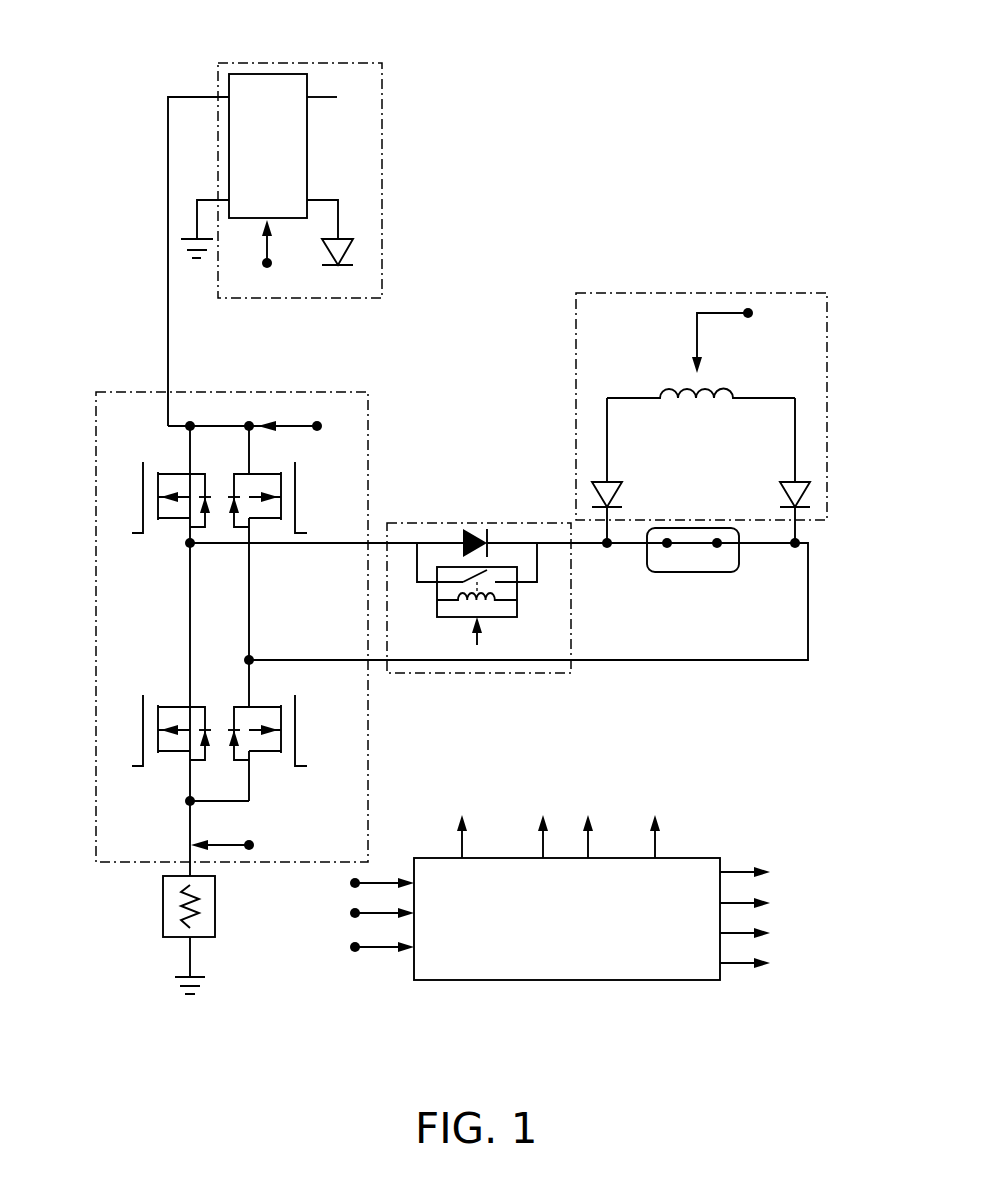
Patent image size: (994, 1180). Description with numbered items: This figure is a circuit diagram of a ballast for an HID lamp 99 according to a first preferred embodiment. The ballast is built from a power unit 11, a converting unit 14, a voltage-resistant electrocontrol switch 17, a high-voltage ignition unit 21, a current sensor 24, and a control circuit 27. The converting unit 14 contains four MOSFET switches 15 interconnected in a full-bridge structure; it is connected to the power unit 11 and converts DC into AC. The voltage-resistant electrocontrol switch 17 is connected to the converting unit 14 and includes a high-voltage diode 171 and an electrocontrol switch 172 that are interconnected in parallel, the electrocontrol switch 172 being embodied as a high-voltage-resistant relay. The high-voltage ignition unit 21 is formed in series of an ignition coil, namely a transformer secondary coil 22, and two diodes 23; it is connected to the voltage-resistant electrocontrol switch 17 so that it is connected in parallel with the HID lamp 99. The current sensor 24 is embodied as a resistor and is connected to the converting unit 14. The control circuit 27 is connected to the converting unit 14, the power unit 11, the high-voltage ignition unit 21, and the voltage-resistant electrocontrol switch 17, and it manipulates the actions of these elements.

The power unit 11 is at (291, 214).
The converting unit 14 is at (302, 214).
The MOSFET switches 15 is at (155, 462).
The voltage-resistant electrocontrol switch 17 is at (479, 536).
The high-voltage diode 171 is at (478, 523).
The electrocontrol switch 172 is at (458, 617).
The high-voltage ignition unit 21 is at (704, 376).
The transformer secondary coil 22 is at (738, 393).
The diodes 23 is at (598, 478).
The current sensor 24 is at (163, 907).
The control circuit 27 is at (567, 980).
The HID lamp 99 is at (739, 565).